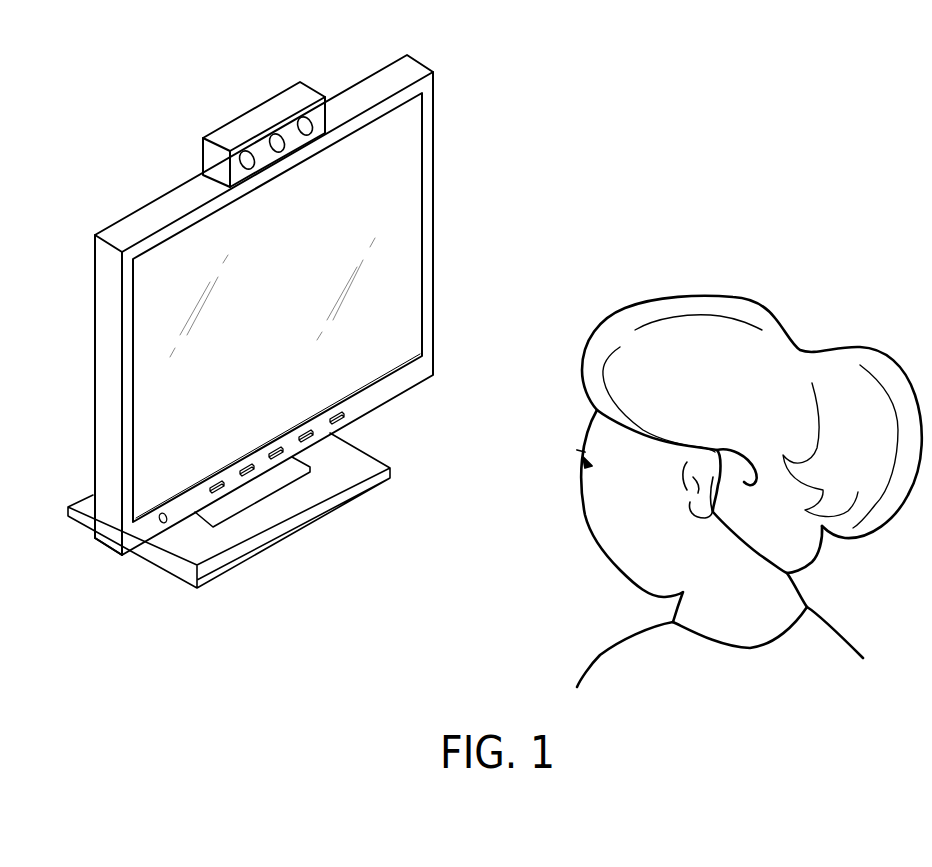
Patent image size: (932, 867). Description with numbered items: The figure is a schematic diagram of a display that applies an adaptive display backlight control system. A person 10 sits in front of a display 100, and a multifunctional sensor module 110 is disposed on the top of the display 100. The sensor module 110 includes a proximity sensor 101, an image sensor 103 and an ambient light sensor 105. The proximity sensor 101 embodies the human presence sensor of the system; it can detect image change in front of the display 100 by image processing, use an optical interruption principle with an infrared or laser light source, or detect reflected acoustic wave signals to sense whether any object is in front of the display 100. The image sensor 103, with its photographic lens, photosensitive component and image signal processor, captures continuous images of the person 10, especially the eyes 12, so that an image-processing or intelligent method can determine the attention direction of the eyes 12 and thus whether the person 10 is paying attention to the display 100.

The display 100 is at (433, 220).
The multifunctional sensor module 110 is at (207, 157).
The proximity sensor 101 is at (306, 120).
The image sensor 103 is at (276, 132).
The ambient light sensor 105 is at (247, 155).
The person 10 is at (770, 338).
The eyes 12 is at (585, 460).